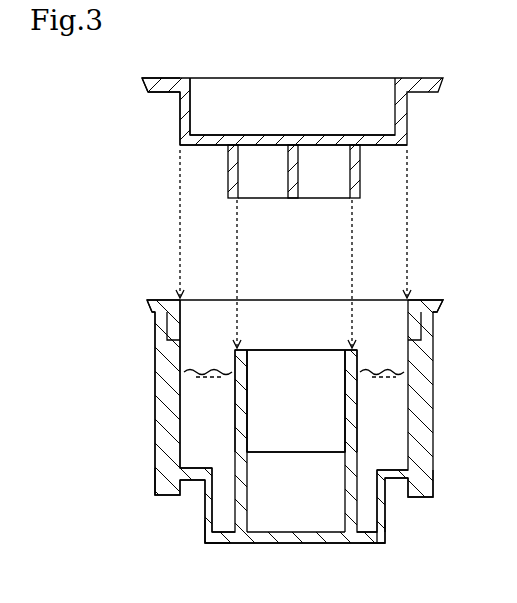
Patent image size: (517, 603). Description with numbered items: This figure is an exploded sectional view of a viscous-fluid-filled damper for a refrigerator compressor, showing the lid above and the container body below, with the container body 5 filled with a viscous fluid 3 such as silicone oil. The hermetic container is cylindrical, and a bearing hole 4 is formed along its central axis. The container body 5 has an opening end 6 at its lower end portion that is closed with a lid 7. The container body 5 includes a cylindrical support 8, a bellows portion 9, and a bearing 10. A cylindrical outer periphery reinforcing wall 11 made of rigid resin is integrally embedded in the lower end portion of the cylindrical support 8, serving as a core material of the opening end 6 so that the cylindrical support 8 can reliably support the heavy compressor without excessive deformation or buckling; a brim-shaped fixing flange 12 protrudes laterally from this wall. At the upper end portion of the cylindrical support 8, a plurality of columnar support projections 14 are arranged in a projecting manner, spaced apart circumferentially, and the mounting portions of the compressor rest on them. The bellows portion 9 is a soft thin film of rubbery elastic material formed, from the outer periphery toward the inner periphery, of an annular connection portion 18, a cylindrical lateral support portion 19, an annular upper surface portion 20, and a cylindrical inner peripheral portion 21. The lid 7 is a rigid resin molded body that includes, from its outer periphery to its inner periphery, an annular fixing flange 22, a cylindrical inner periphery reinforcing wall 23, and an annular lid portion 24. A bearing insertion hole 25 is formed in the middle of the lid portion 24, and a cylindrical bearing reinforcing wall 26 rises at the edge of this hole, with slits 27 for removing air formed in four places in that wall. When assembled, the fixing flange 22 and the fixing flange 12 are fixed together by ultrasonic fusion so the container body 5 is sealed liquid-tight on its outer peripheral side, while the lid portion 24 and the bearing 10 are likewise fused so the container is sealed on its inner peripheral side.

The viscous fluid 3 is at (374, 434).
The bearing hole 4 is at (336, 536).
The container body 5 is at (435, 386).
The opening end 6 is at (421, 300).
The lid 7 is at (441, 82).
The cylindrical support 8 is at (154, 401).
The bellows portion 9 is at (210, 533).
The bearing 10 is at (250, 378).
The outer periphery reinforcing wall 11 is at (160, 320).
The fixing flange 12 is at (150, 302).
The support projections 14 is at (157, 490).
The annular connection portion 18 is at (195, 497).
The cylindrical lateral support portion 19 is at (388, 510).
The annular upper surface portion 20 is at (360, 546).
The cylindrical inner peripheral portion 21 is at (250, 485).
The fixing flange 22 is at (141, 83).
The inner periphery reinforcing wall 23 is at (163, 108).
The lid portion 24 is at (216, 148).
The bearing insertion hole 25 is at (243, 137).
The bearing reinforcing wall 26 is at (361, 168).
The slits 27 is at (293, 199).